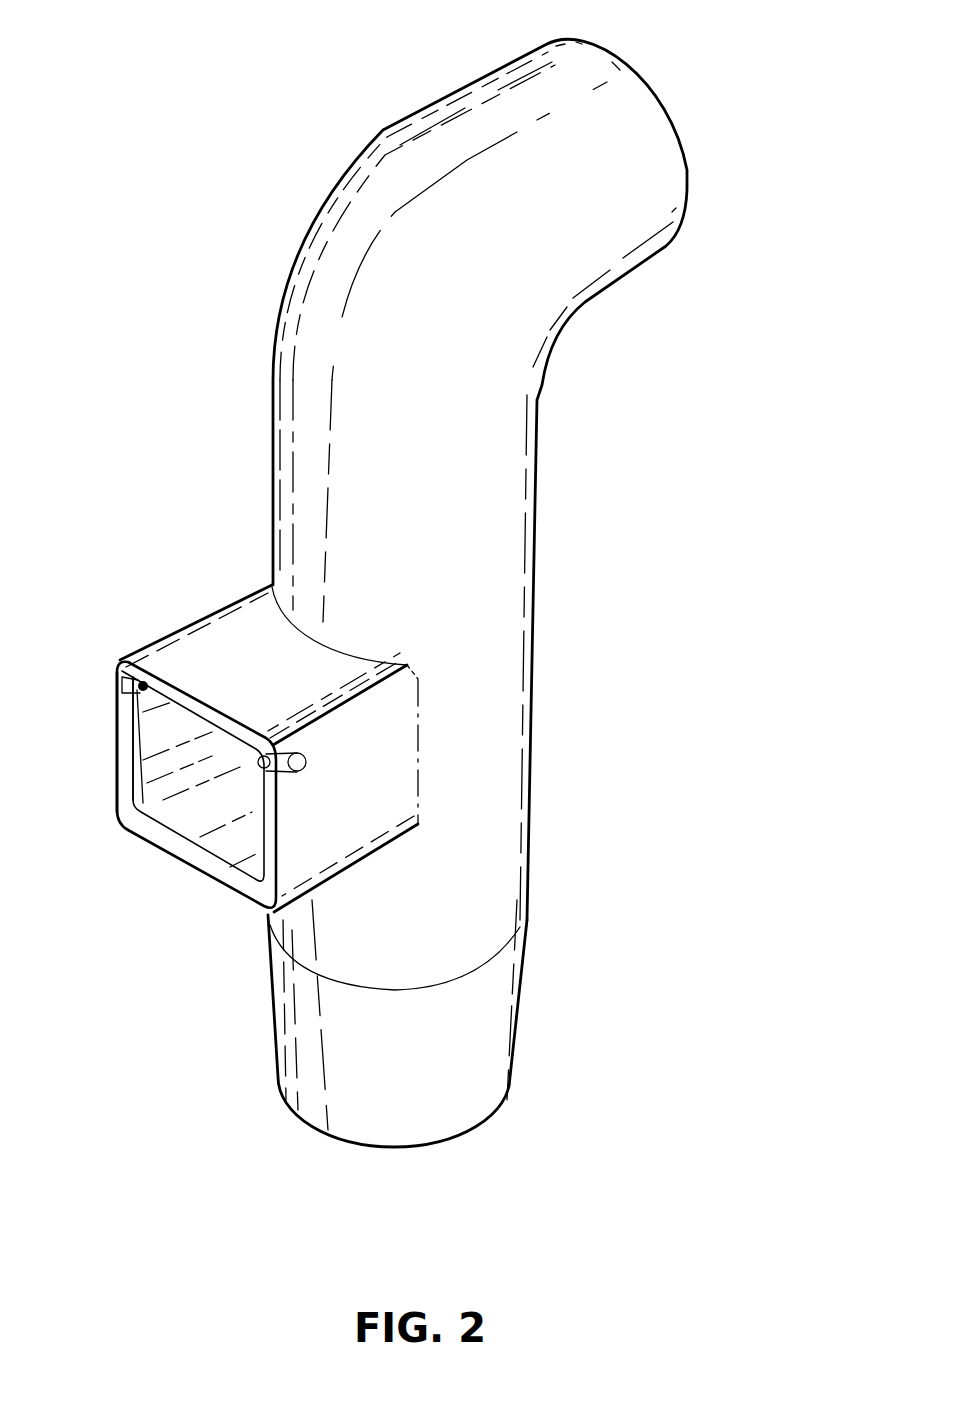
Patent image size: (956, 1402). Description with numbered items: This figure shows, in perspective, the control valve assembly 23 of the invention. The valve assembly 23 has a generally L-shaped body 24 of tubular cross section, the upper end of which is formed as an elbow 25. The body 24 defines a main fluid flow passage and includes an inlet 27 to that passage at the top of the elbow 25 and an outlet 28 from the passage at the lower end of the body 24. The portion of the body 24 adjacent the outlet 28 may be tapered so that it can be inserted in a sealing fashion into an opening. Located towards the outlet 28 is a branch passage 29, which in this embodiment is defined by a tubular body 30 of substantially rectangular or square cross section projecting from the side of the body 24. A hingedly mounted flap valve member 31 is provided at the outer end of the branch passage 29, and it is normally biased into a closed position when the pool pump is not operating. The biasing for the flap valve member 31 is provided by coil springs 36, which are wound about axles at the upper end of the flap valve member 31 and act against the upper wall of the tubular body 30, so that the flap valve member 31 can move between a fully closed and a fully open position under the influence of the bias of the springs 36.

The valve assembly 23 is at (226, 452).
The body 24 is at (537, 474).
The elbow 25 is at (330, 155).
The inlet 27 is at (690, 118).
The outlet 28 is at (508, 1111).
The branch passage 29 is at (183, 853).
The tubular body 30 is at (233, 578).
The flap valve member 31 is at (120, 818).
The coil springs 36 is at (130, 694).